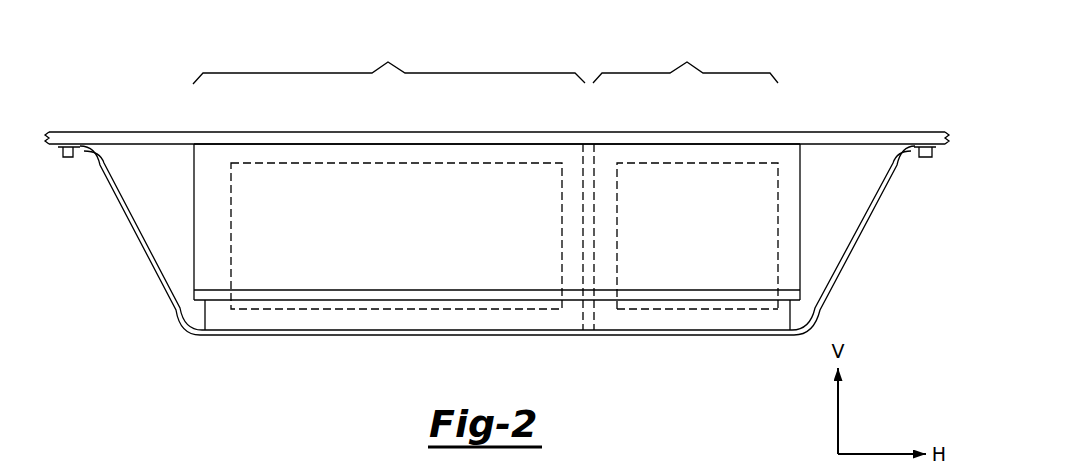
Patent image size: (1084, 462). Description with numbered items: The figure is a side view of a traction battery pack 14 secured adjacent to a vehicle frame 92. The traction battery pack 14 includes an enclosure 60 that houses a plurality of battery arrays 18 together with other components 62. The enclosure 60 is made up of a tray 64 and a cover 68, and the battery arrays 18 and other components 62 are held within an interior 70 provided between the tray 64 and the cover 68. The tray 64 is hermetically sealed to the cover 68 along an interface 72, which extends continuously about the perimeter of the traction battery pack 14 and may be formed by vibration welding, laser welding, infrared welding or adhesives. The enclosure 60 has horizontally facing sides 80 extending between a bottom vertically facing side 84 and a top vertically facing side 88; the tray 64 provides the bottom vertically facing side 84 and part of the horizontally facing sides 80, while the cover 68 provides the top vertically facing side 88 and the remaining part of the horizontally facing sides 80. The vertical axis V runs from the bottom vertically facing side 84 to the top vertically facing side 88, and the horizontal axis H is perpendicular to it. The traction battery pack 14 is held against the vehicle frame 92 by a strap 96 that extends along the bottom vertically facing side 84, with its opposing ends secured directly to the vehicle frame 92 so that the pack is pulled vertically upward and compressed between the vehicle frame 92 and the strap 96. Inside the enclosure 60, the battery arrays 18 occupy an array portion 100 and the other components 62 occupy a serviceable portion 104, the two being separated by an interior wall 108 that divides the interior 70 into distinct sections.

The traction battery pack 14 is at (813, 158).
The battery arrays 18 is at (430, 163).
The enclosure 60 is at (800, 195).
The other components 62 is at (650, 163).
The tray 64 is at (790, 310).
The cover 68 is at (800, 243).
The interior 70 is at (223, 180).
The interface 72 is at (665, 288).
The horizontally facing sides 80 is at (194, 245).
The bottom vertically facing side 84 is at (248, 330).
The top vertically facing side 88 is at (310, 144).
The vehicle frame 92 is at (140, 132).
The strap 96 is at (112, 188).
The array portion 100 is at (389, 60).
The serviceable portion 104 is at (685, 60).
The interior wall 108 is at (597, 162).